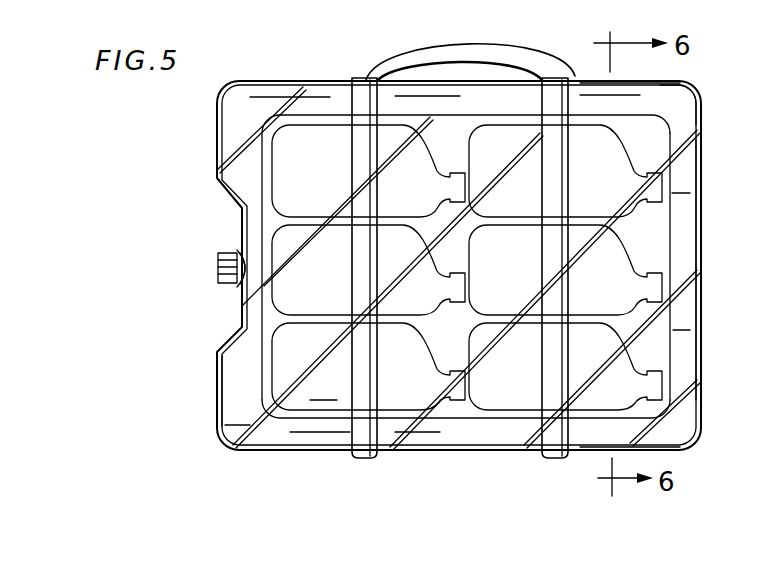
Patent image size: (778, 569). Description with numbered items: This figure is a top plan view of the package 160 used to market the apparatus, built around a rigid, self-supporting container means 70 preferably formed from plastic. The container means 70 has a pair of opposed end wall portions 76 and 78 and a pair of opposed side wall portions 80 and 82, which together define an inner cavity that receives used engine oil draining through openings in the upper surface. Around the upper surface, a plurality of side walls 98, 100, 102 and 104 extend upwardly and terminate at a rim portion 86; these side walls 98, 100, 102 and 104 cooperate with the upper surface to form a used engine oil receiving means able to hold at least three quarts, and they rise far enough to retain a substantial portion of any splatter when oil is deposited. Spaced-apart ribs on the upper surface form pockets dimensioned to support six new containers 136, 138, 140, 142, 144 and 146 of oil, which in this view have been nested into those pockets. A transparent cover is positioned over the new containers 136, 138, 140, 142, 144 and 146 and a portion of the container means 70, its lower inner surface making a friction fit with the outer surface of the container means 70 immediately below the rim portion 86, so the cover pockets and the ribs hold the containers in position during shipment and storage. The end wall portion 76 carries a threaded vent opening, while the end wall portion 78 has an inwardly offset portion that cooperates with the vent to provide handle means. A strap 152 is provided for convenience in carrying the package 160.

The container means 70 is at (200, 482).
The end wall portion 76 is at (215, 366).
The end wall portion 78 is at (700, 306).
The side wall portion 80 is at (587, 75).
The side wall portion 82 is at (600, 435).
The rim portion 86 is at (687, 123).
The side wall 98 is at (662, 244).
The side wall 100 is at (326, 114).
The side wall 102 is at (276, 318).
The side wall 104 is at (452, 408).
The new container of oil 136 is at (344, 181).
The new container of oil 138 is at (344, 281).
The new container of oil 140 is at (344, 399).
The new container of oil 142 is at (614, 181).
The new container of oil 144 is at (614, 292).
The new container of oil 146 is at (614, 360).
The strap 152 is at (357, 78).
The package 160 is at (172, 247).